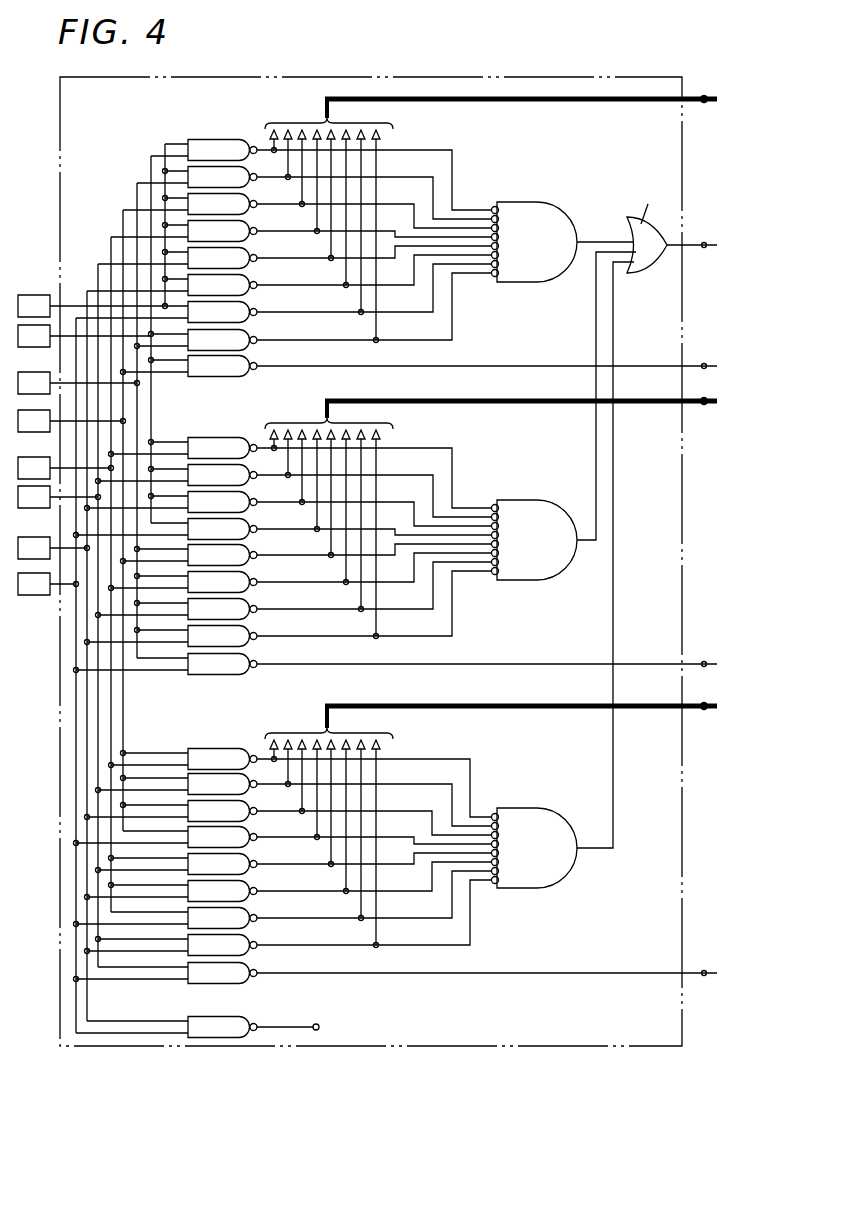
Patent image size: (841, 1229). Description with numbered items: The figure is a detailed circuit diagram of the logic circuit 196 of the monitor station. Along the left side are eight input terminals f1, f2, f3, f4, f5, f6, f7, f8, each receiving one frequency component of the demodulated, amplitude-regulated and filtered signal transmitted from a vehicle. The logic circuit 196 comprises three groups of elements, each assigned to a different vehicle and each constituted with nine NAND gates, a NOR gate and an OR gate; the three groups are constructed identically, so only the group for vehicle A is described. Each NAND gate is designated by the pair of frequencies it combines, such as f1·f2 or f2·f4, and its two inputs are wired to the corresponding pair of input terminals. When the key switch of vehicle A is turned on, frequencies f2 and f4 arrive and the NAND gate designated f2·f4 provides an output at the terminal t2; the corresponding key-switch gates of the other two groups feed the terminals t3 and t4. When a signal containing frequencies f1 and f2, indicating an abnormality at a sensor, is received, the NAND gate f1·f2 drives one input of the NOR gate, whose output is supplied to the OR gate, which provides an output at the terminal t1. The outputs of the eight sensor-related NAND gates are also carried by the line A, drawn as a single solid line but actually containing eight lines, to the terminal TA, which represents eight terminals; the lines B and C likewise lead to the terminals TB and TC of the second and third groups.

The logic circuit 196 is at (376, 585).
The line A is at (417, 225).
The line B is at (417, 523).
The line C is at (417, 832).
The terminal TA is at (529, 116).
The terminal TB is at (529, 414).
The terminal TC is at (529, 720).
The terminal t1 is at (692, 257).
The terminal t2 is at (489, 350).
The terminal t3 is at (489, 648).
The terminal t4 is at (489, 959).
The terminal f1 is at (91, 306).
The terminal f2 is at (84, 336).
The terminal f3 is at (77, 383).
The terminal f4 is at (70, 421).
The terminal f5 is at (64, 468).
The terminal f6 is at (58, 497).
The terminal f7 is at (52, 548).
The terminal f8 is at (47, 584).